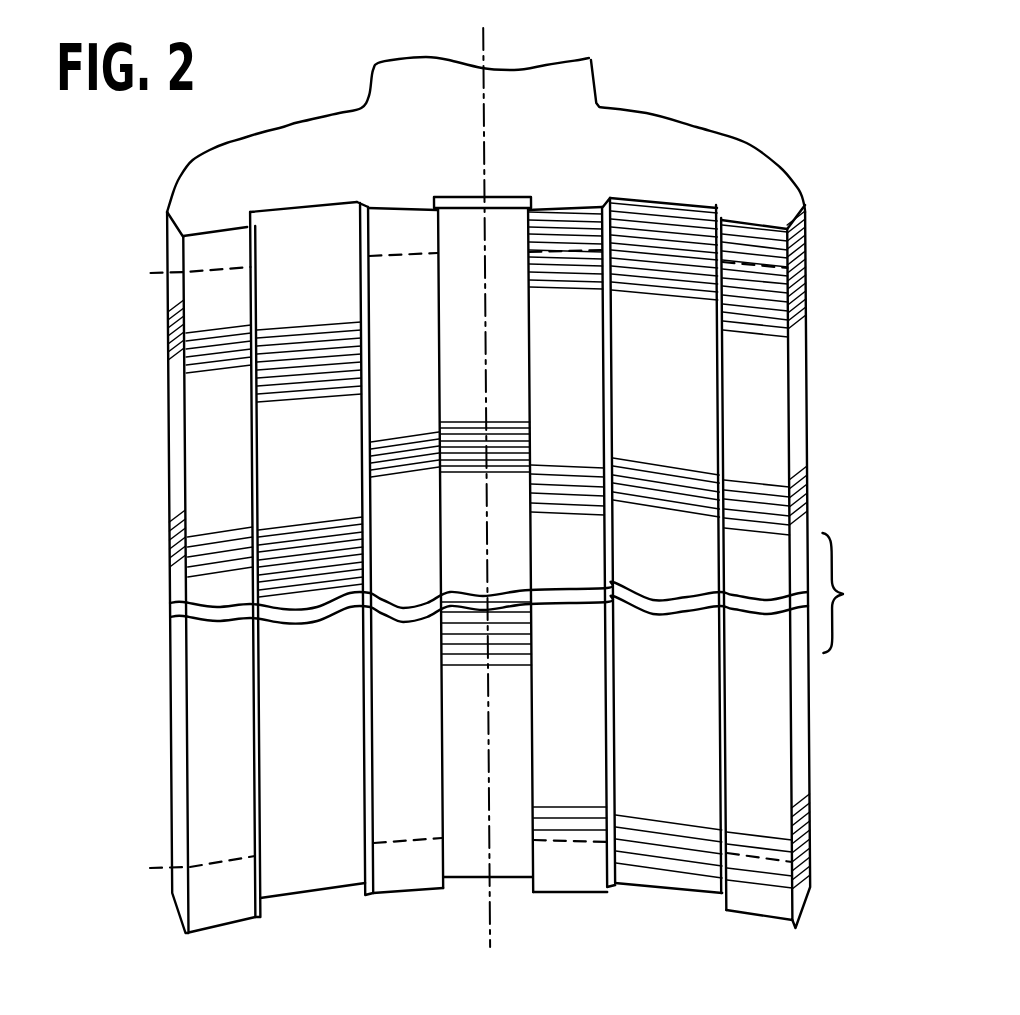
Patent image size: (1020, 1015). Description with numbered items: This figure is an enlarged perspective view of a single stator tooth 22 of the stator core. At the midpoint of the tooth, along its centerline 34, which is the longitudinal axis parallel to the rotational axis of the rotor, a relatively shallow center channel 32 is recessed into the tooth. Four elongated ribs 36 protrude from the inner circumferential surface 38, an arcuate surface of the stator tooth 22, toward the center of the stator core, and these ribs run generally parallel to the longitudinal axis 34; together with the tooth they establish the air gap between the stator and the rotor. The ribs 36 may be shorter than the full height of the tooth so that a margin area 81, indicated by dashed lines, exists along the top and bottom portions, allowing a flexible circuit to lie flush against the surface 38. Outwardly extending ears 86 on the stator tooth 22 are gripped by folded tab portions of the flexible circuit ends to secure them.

The stator tooth 22 is at (655, 137).
The center channel 32 is at (447, 197).
The centerline 34 is at (480, 52).
The elongated ribs 36 is at (742, 384).
The inner circumferential surface 38 is at (462, 277).
The margin area 81 is at (196, 248).
The ears 86 is at (185, 203).